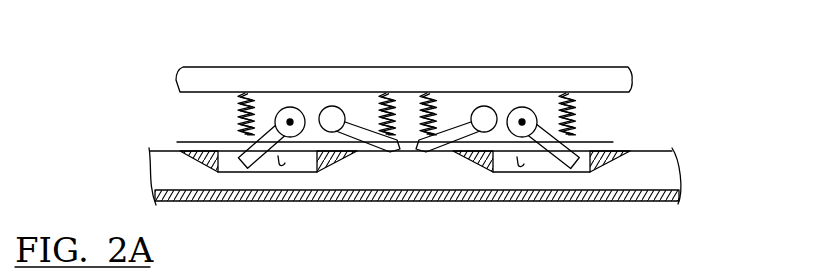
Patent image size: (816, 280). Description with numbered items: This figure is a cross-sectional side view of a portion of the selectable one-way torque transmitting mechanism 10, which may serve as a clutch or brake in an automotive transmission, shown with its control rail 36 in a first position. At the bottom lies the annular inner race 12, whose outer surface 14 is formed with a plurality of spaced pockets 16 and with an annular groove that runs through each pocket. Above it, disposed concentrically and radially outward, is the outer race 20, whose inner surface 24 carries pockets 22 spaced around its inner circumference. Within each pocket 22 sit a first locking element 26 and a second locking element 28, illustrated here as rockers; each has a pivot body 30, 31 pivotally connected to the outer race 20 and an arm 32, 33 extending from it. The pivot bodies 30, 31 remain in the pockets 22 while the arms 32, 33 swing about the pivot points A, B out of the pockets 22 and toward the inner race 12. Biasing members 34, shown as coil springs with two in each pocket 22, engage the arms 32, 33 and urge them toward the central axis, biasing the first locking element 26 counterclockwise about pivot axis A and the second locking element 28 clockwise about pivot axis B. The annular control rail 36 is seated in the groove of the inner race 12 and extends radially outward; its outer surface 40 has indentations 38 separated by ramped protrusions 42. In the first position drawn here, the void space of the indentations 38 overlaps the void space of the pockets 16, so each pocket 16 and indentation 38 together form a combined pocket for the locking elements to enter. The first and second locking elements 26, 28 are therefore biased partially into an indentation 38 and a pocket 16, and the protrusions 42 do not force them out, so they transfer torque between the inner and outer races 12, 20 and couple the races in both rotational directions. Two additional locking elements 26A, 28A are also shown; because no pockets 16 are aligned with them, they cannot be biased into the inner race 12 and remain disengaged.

The selectable one-way torque transmitting mechanism 10 is at (683, 80).
The inner race 12 is at (620, 143).
The outer surface 14 is at (619, 144).
The pockets 16 is at (278, 164).
The outer race 20 is at (484, 58).
The pockets 22 is at (603, 115).
The inner surface 24 is at (197, 143).
The first locking element 26 is at (546, 108).
The additional locking element 26A is at (363, 127).
The second locking element 28 is at (268, 110).
The additional locking element 28A is at (443, 128).
The pivot body 30 is at (520, 107).
The pivot body 31 is at (292, 107).
The arm 32 is at (565, 157).
The arm 33 is at (243, 155).
The biasing members 34 is at (239, 112).
The control rail 36 is at (411, 174).
The indentations 38 is at (220, 160).
The outer surface 40 is at (172, 150).
The protrusions 42 is at (368, 175).
The pivot axis A is at (522, 125).
The pivot axis B is at (290, 125).